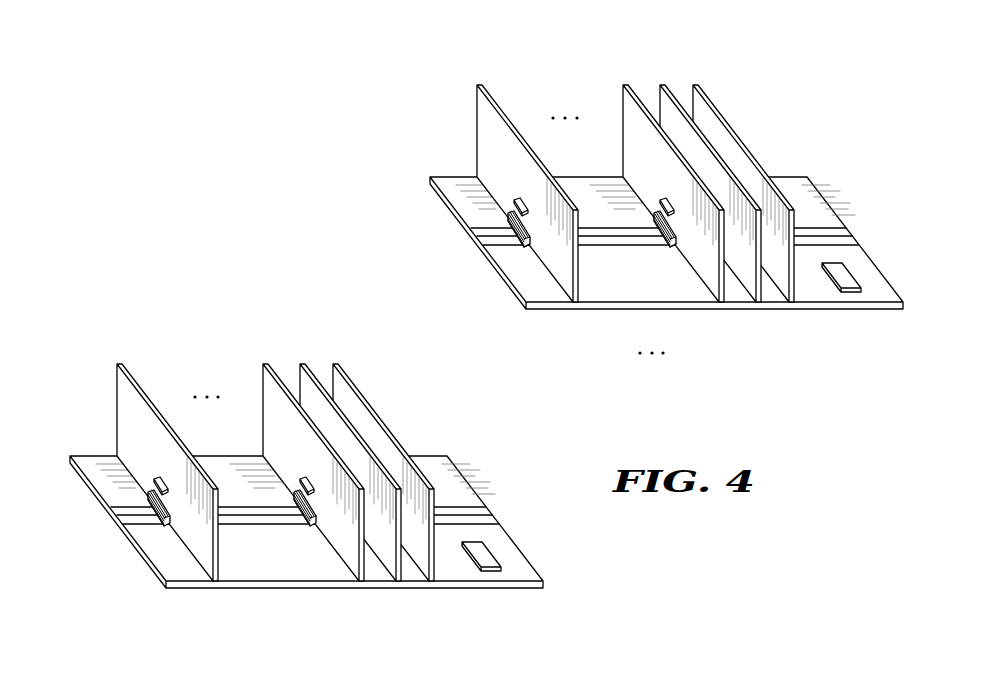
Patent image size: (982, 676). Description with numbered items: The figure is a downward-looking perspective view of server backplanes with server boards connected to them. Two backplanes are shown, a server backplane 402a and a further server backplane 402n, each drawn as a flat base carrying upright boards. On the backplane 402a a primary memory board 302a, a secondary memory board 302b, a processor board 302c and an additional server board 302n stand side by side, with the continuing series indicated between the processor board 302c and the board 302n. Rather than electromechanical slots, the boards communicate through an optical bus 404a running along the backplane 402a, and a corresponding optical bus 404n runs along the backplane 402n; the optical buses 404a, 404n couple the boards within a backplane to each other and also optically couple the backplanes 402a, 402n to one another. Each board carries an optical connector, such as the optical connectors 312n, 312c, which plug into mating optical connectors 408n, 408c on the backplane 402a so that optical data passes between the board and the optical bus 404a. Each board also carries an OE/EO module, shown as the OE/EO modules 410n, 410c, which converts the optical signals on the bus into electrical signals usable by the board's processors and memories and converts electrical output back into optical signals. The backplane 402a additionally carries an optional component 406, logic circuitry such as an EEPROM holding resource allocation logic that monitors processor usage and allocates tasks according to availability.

The server board 302n is at (488, 91).
The processor board 302c is at (630, 90).
The secondary memory board 302b is at (668, 90).
The primary memory board 302a is at (702, 90).
The server backplane 402a is at (644, 205).
The server backplane 402n is at (281, 500).
The optical bus 404a is at (607, 247).
The optical bus 404n is at (247, 525).
The optional component 406 is at (844, 273).
The mating optical connector 408n is at (531, 244).
The mating optical connector 408c is at (670, 246).
The OE/EO module 410n is at (518, 198).
The OE/EO module 410c is at (664, 198).
The optical connector 312n is at (531, 244).
The optical connector 312c is at (676, 241).